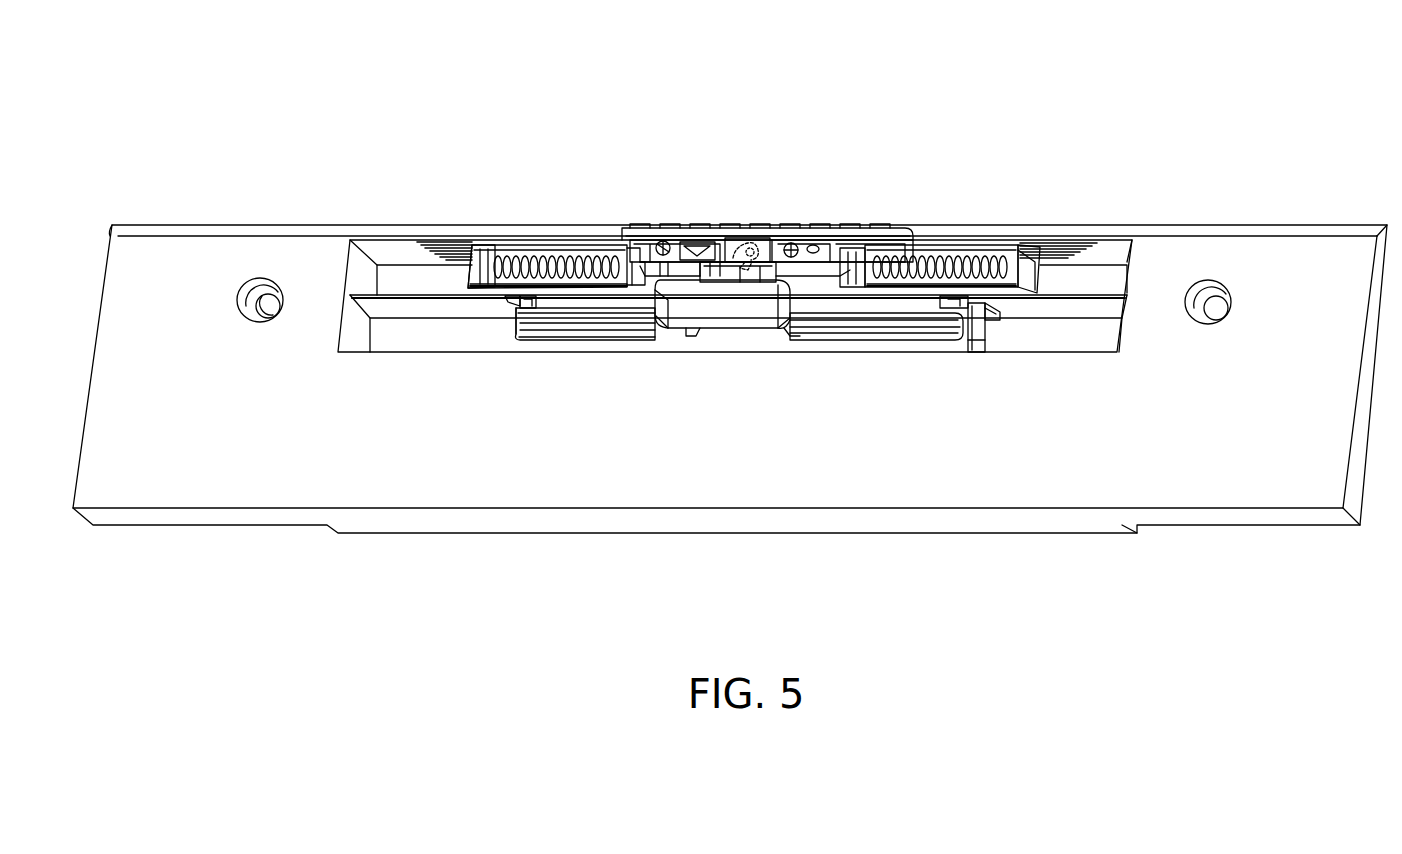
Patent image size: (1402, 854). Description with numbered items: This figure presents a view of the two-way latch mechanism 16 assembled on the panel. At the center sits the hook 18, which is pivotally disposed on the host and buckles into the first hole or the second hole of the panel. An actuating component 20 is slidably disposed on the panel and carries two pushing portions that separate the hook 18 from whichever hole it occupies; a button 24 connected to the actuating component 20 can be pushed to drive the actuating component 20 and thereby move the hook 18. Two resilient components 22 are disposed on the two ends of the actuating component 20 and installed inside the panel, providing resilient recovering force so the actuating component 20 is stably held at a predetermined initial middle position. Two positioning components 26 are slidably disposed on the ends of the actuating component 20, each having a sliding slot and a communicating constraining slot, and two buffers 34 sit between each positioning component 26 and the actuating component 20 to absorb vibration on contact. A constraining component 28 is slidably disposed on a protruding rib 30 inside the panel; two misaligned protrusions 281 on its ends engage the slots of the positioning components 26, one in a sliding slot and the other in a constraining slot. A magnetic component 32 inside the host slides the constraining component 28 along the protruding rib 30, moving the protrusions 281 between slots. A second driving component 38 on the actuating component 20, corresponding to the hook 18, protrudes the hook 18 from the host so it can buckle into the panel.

The two-way latch mechanism 16 is at (1078, 115).
The hook 18 is at (746, 242).
The actuating component 20 is at (830, 250).
The resilient component 22 is at (558, 250).
The button 24 is at (796, 226).
The positioning component 26 is at (517, 250).
The constraining component 28 is at (977, 340).
The protrusion 281 is at (530, 302).
The protruding rib 30 is at (592, 322).
The magnetic component 32 is at (710, 303).
The buffer 34 is at (632, 250).
The second driving component 38 is at (745, 275).